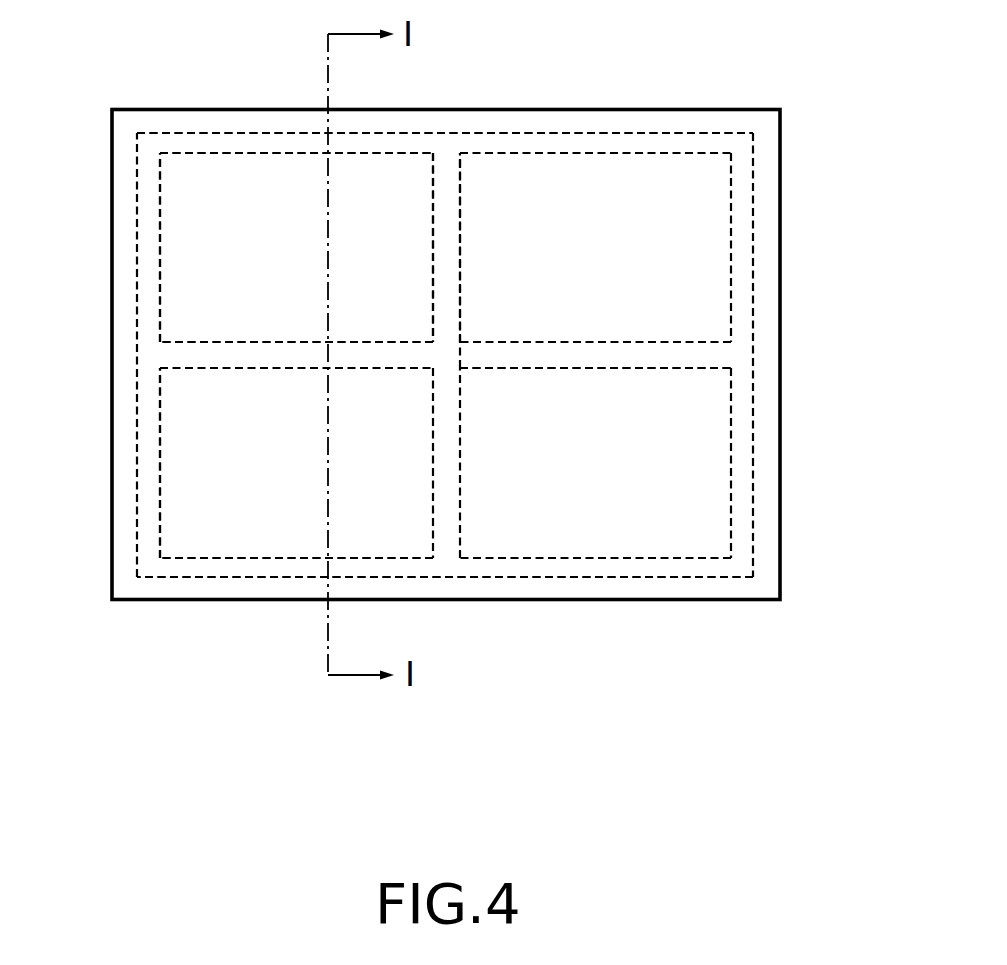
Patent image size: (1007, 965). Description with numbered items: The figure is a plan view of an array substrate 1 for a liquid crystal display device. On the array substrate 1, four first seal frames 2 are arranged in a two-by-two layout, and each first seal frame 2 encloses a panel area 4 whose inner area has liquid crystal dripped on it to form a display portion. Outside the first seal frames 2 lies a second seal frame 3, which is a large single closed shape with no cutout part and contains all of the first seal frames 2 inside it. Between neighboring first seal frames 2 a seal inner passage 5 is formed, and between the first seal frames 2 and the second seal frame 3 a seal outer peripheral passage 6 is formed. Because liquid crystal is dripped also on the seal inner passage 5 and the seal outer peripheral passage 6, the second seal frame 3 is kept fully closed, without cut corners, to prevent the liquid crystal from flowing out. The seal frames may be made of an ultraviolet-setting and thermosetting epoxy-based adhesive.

The array substrate 1 is at (612, 603).
The first seal frame 2 is at (208, 153).
The second seal frame 3 is at (753, 257).
The panel area 4 is at (180, 215).
The seal inner passage 5 is at (444, 175).
The seal outer peripheral passage 6 is at (539, 142).